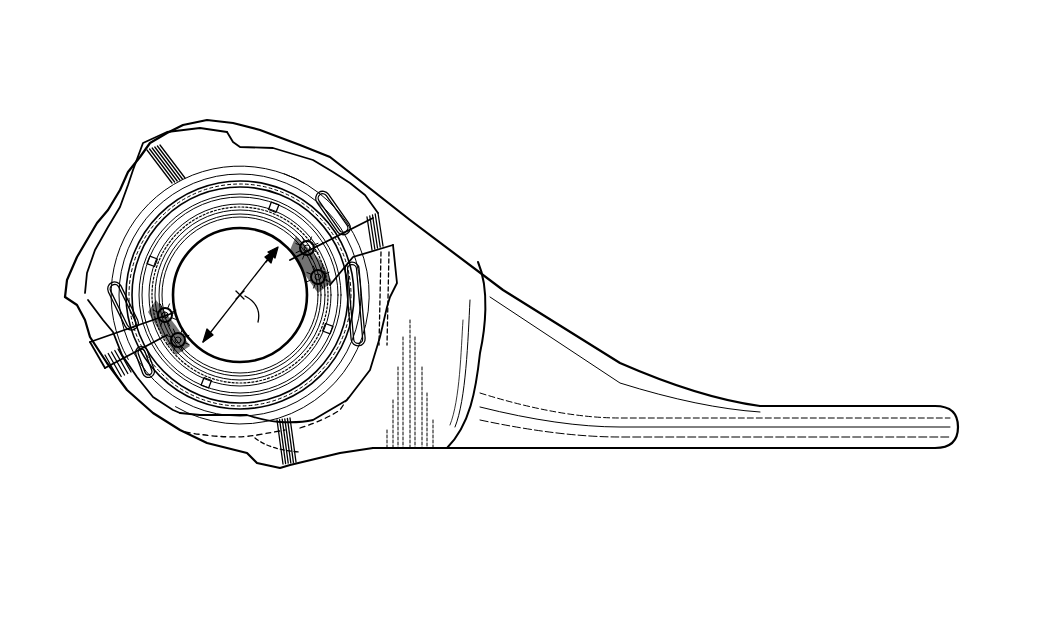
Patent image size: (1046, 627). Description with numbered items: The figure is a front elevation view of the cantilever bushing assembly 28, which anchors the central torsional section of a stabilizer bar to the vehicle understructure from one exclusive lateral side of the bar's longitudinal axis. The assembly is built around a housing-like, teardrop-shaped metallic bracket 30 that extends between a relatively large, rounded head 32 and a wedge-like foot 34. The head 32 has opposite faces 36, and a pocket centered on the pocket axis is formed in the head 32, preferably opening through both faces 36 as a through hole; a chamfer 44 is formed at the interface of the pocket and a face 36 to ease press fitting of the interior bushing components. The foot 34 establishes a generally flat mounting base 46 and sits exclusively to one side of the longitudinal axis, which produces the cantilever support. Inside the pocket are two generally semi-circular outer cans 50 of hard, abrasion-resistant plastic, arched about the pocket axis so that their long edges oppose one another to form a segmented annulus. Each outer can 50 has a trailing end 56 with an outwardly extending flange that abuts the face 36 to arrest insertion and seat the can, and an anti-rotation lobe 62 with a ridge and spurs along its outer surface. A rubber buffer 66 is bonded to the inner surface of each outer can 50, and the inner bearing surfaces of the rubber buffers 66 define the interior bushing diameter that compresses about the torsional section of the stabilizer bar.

The cantilever bushing assembly 28 is at (552, 150).
The bracket 30 is at (480, 266).
The head 32 is at (80, 253).
The foot 34 is at (935, 406).
The face 36 is at (373, 432).
The chamfer 44 is at (380, 237).
The mounting base 46 is at (793, 450).
The outer can 50 is at (290, 150).
The trailing end 56 is at (120, 217).
The anti-rotation lobe 62 is at (310, 440).
The rubber buffer 66 is at (302, 192).